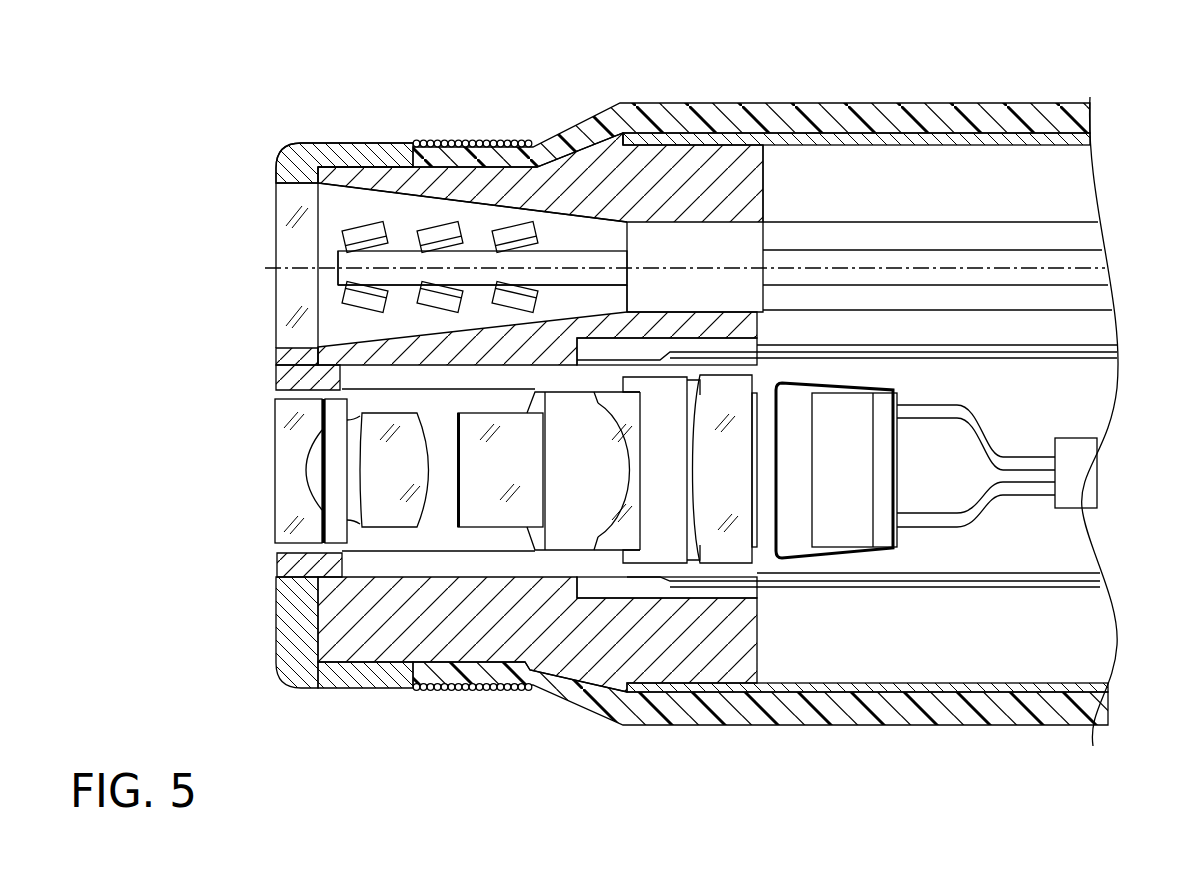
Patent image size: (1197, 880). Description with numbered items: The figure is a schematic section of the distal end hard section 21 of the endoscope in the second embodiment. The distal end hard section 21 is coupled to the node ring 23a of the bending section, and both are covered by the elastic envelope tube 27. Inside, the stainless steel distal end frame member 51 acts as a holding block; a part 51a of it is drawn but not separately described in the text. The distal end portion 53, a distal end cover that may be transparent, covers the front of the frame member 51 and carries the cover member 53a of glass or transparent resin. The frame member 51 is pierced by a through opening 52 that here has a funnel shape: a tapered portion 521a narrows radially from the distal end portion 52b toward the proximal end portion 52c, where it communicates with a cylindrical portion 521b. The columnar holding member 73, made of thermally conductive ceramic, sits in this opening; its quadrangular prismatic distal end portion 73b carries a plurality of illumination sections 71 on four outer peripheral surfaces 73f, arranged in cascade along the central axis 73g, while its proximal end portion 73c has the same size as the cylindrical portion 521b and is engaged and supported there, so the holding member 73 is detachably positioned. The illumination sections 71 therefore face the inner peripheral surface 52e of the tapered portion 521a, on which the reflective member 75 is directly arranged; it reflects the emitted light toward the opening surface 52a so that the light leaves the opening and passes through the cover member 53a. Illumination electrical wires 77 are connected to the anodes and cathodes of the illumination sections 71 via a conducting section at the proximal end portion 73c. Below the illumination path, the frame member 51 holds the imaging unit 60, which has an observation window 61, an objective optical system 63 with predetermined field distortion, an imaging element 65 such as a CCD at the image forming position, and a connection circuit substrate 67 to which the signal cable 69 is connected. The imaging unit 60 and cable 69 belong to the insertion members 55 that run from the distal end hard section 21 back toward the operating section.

The distal end hard section 21 is at (262, 132).
The node ring 23a is at (866, 138).
The envelope tube 27 is at (926, 104).
The distal end frame member 51 is at (612, 138).
The plate portion 51a is at (758, 345).
The through opening 52 is at (768, 208).
The opening surface 52a is at (292, 180).
The distal end portion 52b is at (358, 160).
The proximal end portion 52c is at (741, 150).
The inner peripheral surface 52e is at (632, 242).
The tapered portion 521a is at (480, 220).
The cylindrical portion 521b is at (680, 220).
The distal end portion 53 is at (326, 147).
The cover member 53a is at (290, 215).
The insertion members 55 is at (974, 217).
The imaging unit 60 is at (787, 598).
The observation window 61 is at (275, 507).
The objective optical system 63 is at (510, 541).
The imaging element 65 is at (800, 535).
The connection circuit substrate 67 is at (881, 536).
The cable 69 is at (1077, 478).
The illumination sections 71 is at (372, 228).
The holding member 73 is at (578, 246).
The distal end portion 73b is at (551, 262).
The proximal end portion 73c is at (760, 238).
The outer peripheral surface 73f is at (396, 289).
The central axis 73g is at (766, 266).
The reflective member 75 is at (318, 238).
The illumination electrical wires 77 is at (1080, 237).